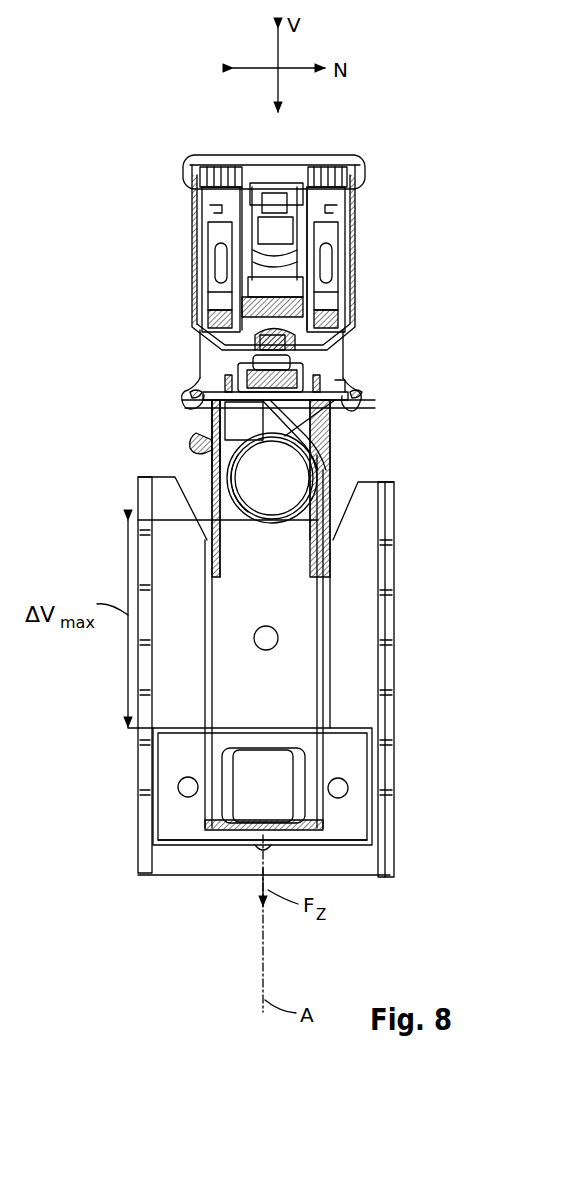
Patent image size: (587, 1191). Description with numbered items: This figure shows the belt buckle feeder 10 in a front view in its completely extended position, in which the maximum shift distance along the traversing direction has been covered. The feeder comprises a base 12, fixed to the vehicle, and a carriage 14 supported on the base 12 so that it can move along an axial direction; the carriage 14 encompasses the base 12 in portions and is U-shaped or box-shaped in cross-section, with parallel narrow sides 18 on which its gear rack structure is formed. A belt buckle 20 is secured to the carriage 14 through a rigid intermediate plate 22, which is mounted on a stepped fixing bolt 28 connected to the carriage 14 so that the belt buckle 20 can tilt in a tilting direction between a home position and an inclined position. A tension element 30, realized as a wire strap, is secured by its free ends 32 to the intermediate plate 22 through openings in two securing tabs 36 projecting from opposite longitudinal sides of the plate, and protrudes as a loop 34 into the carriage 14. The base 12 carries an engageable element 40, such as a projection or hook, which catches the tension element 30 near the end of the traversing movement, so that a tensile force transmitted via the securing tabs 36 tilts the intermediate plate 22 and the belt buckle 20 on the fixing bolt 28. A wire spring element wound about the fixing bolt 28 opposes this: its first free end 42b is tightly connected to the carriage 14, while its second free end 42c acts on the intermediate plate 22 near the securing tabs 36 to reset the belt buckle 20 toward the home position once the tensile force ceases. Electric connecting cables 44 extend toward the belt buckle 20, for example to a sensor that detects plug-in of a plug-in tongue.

The belt buckle feeder 10 is at (166, 120).
The base 12 is at (348, 818).
The carriage 14 is at (128, 838).
The narrow sides 18 is at (165, 497).
The belt buckle 20 is at (190, 252).
The intermediate plate 22 is at (210, 412).
The fixing bolt 28 is at (298, 473).
The tension element 30 is at (332, 662).
The free ends 32 is at (360, 407).
The loop 34 is at (247, 832).
The securing tabs 36 is at (350, 389).
The engageable element 40 is at (190, 845).
The first free end of the spring element 42b is at (195, 440).
The second free end of the spring element 42c is at (330, 428).
The electric connecting cables 44 is at (188, 402).